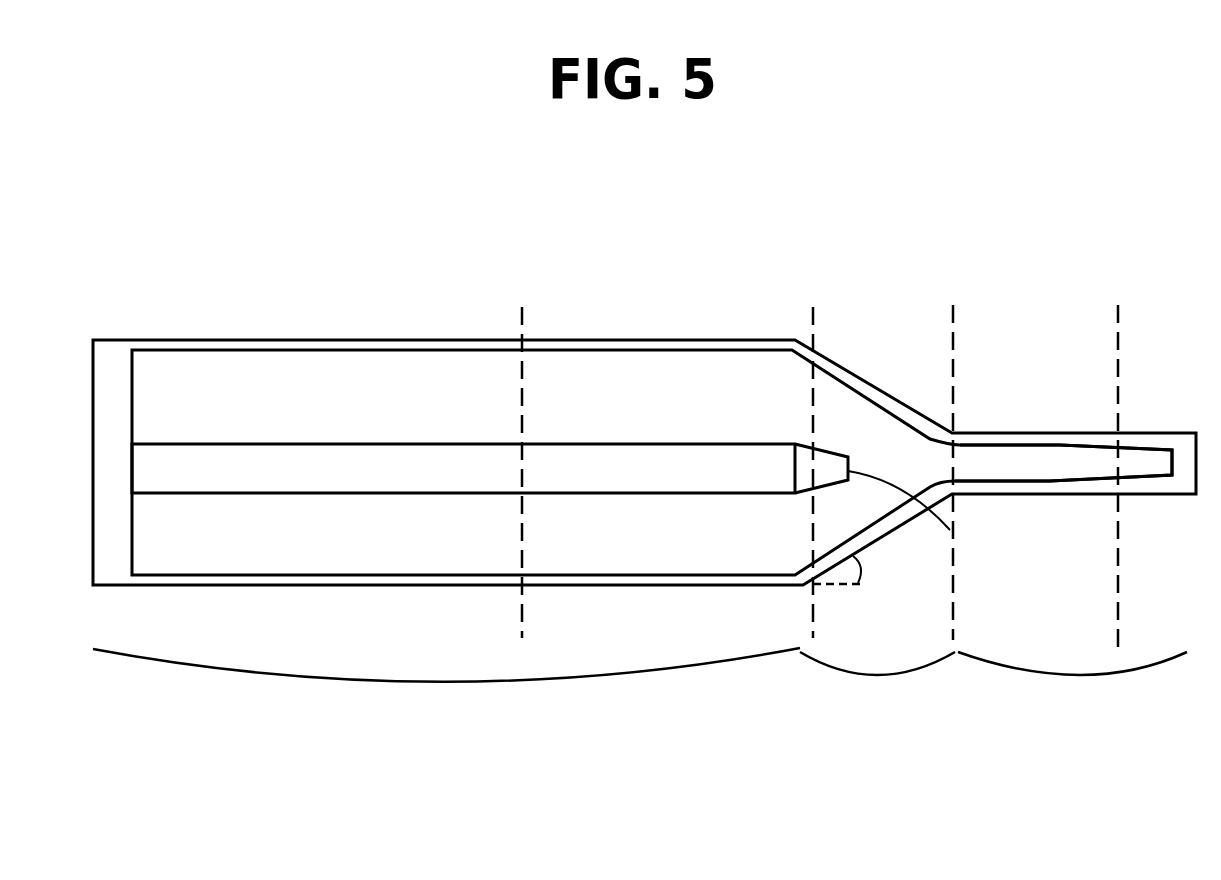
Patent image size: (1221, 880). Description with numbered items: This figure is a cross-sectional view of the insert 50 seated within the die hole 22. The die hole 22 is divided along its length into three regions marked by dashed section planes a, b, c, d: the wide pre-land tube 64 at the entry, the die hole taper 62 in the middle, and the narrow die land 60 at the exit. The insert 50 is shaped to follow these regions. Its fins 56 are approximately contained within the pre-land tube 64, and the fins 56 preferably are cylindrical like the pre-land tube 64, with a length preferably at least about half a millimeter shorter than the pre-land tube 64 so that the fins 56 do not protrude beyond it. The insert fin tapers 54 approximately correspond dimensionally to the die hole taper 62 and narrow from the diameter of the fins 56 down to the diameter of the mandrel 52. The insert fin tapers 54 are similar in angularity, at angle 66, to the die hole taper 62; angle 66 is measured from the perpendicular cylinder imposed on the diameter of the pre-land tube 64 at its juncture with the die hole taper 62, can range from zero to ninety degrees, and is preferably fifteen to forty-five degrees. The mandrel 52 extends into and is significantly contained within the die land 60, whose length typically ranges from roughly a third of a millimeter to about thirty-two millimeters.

The die hole 22 is at (112, 338).
The insert 50 is at (265, 350).
The mandrel 52 is at (1033, 458).
The insert fin tapers 54 is at (855, 503).
The fins 56 is at (615, 415).
The die land 60 is at (1072, 707).
The die hole taper 62 is at (877, 707).
The pre-land tube 64 is at (446, 705).
The angle 66 is at (862, 571).
The section plane a is at (520, 440).
The section plane b is at (811, 438).
The section plane c is at (949, 439).
The section plane d is at (1115, 443).